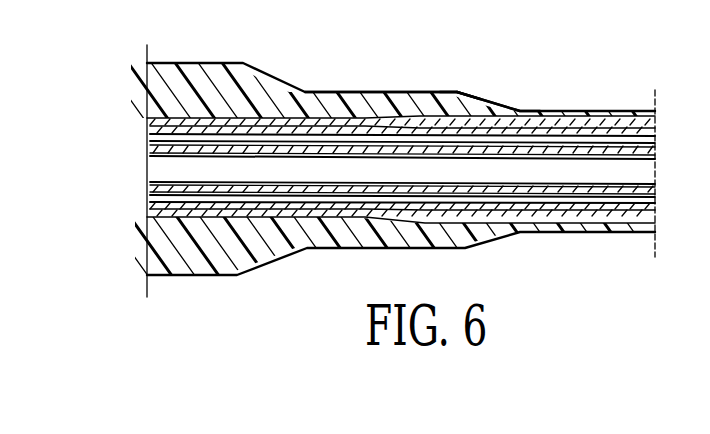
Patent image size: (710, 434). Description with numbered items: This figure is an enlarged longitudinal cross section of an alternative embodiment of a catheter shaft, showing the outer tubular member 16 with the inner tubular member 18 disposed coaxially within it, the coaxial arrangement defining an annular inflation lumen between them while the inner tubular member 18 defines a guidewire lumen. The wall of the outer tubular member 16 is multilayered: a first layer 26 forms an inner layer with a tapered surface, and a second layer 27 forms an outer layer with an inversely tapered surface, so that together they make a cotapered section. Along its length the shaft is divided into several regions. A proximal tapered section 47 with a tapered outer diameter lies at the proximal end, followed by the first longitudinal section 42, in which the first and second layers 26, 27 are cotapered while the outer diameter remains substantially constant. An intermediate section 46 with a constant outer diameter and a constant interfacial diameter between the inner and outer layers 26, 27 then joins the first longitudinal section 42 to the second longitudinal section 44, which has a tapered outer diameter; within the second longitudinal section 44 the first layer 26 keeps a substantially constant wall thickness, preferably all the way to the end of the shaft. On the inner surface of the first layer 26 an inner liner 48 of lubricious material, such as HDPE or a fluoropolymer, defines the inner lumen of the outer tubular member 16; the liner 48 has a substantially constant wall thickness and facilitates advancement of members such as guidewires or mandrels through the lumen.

The outer tubular member 16 is at (173, 277).
The inner tubular member 18 is at (147, 198).
The first layer 26 is at (655, 141).
The second layer 27 is at (652, 130).
The first longitudinal section 42 is at (382, 92).
The second longitudinal section 44 is at (502, 101).
The intermediate section 46 is at (443, 93).
The proximal tapered section 47 is at (268, 76).
The inner liner 48 is at (655, 202).